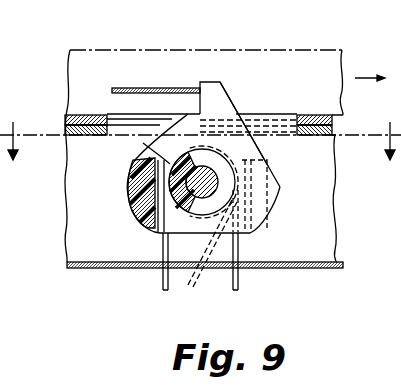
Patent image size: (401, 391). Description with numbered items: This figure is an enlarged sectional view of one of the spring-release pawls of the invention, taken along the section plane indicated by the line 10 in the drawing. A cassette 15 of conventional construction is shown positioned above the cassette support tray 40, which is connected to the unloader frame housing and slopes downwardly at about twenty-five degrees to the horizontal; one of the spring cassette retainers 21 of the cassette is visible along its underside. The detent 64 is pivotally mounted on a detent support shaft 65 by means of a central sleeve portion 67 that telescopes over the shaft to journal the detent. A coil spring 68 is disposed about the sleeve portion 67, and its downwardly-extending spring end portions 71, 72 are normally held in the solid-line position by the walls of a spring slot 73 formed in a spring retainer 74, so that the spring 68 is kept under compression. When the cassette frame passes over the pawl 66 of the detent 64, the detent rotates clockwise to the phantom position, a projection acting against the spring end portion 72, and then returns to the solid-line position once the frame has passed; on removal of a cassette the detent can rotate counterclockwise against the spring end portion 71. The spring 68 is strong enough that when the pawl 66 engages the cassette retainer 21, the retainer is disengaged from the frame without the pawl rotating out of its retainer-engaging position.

The section line 10- 10 is at (200, 158).
The cassette 15 is at (284, 50).
The spring cassette retainer 21 is at (155, 88).
The cassette support tray 40 is at (85, 115).
The detent 64 is at (233, 88).
The detent support shaft 65 is at (216, 188).
The pawl 66 is at (197, 82).
The central sleeve portion 67 is at (157, 223).
The coil spring 68 is at (152, 183).
The spring end portion 71 is at (163, 278).
The spring end portion 72 is at (238, 280).
The spring slot 73 is at (220, 272).
The spring retainer 74 is at (322, 268).